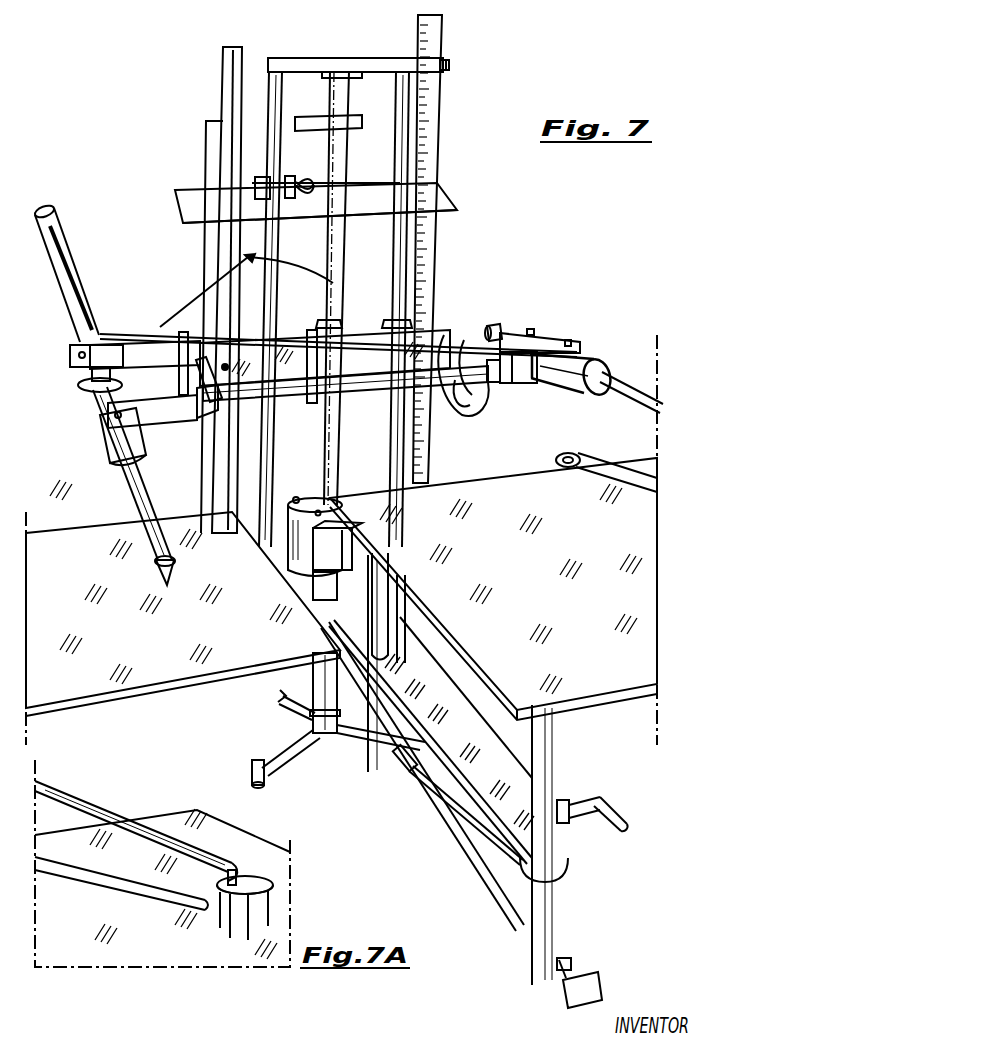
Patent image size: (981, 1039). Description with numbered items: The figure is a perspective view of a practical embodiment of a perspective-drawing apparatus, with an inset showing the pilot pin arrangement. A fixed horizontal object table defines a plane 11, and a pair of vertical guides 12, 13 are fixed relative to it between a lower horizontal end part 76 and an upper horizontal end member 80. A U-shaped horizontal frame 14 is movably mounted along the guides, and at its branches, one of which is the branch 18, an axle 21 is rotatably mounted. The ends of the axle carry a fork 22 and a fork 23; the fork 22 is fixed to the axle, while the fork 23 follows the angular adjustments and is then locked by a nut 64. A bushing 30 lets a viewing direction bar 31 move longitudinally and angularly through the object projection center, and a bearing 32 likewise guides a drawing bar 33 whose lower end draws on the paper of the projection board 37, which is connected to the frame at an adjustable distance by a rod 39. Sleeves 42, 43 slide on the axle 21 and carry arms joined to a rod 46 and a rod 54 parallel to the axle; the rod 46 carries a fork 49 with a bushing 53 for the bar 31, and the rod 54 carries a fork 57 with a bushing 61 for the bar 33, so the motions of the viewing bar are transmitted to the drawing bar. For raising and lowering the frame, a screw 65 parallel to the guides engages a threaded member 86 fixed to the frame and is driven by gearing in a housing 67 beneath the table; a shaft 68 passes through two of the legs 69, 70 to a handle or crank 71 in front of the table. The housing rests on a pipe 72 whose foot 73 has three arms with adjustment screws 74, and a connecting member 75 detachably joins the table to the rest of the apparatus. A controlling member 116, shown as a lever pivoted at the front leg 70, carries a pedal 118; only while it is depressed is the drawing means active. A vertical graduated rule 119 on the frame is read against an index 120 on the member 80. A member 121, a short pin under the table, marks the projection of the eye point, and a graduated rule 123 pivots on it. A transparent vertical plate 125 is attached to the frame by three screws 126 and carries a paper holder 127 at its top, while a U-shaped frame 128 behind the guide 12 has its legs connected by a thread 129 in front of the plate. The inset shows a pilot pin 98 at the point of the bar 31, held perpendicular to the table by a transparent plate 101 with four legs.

In FIG. 7, the plane 11 is at (493, 589).
In FIG. 7A, the plane 11 is at (212, 843).
In FIG. 7, the vertical guide 12 is at (268, 95).
In FIG. 7, the vertical guide 13 is at (400, 164).
In FIG. 7, the U-shaped horizontal frame 14 is at (432, 333).
In FIG. 7, the branch 18 is at (478, 400).
In FIG. 7, the axle 21 is at (440, 395).
In FIG. 7, the fork 22 is at (530, 350).
In FIG. 7, the fork 23 is at (122, 432).
In FIG. 7, the bushing 30 is at (588, 357).
In FIG. 7, the viewing direction bar 31 is at (626, 393).
In FIG. 7A, the viewing direction bar 31 is at (90, 812).
In FIG. 7, the bearing 32 is at (105, 410).
In FIG. 7, the drawing bar 33 is at (128, 482).
In FIG. 7, the projection board 37 is at (142, 680).
In FIG. 7, the rod 39 is at (230, 82).
In FIG. 7, the sleeve 42 is at (310, 403).
In FIG. 7, the sleeve 43 is at (345, 392).
In FIG. 7, the rod 46 is at (470, 347).
In FIG. 7, the fork 49 is at (505, 333).
In FIG. 7, the bushing 53 is at (533, 333).
In FIG. 7, the rod 54 is at (166, 341).
In FIG. 7, the fork 57 is at (116, 338).
In FIG. 7, the bushing 61 is at (73, 360).
In FIG. 7, the nut 64 is at (184, 400).
In FIG. 7, the screw 65 is at (340, 262).
In FIG. 7, the housing 67 is at (306, 553).
In FIG. 7, the shaft 68 is at (515, 765).
In FIG. 7, the leg 69 is at (376, 757).
In FIG. 7, the leg 70 is at (542, 930).
In FIG. 7, the handle or crank 71 is at (603, 812).
In FIG. 7, the pipe 72 is at (318, 675).
In FIG. 7, the foot 73 is at (288, 757).
In FIG. 7, the adjustment screw 74 is at (282, 697).
In FIG. 7, the connecting member 75 is at (462, 758).
In FIG. 7, the lower horizontal end part 76 is at (313, 592).
In FIG. 7, the upper horizontal end member 80 is at (374, 59).
In FIG. 7, the threaded member 86 is at (342, 320).
In FIG. 7A, the pilot pin 98 is at (230, 926).
In FIG. 7A, the plate 101 is at (276, 882).
In FIG. 7, the controlling member 116 is at (458, 835).
In FIG. 7, the pedal 118 is at (598, 985).
In FIG. 7, the vertical graduated rule 119 is at (437, 110).
In FIG. 7, the index 120 is at (434, 66).
In FIG. 7, the member 121 is at (566, 455).
In FIG. 7, the graduated rule 123 is at (626, 469).
In FIG. 7, the vertical plate 125 is at (206, 150).
In FIG. 7, the screw 126 is at (224, 365).
In FIG. 7, the paper holder 127 is at (331, 118).
In FIG. 7, the U-shaped frame 128 is at (177, 192).
In FIG. 7, the thread 129 is at (188, 222).